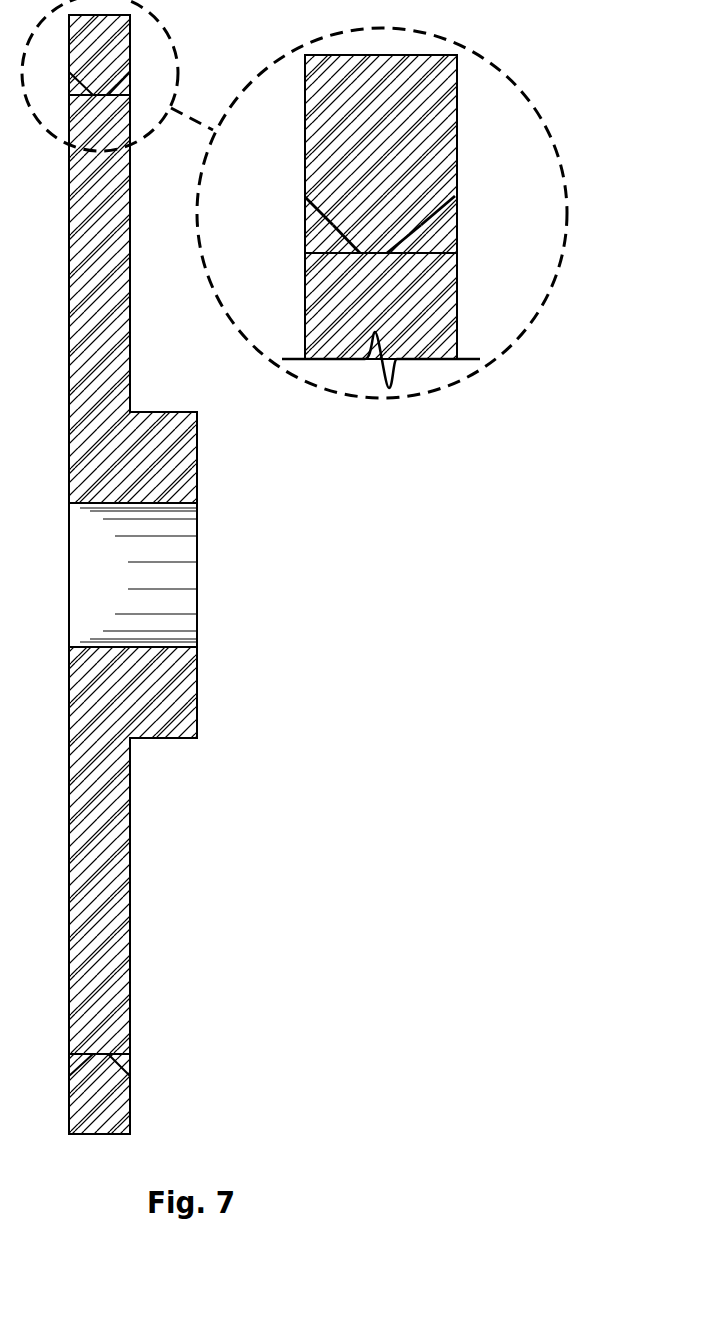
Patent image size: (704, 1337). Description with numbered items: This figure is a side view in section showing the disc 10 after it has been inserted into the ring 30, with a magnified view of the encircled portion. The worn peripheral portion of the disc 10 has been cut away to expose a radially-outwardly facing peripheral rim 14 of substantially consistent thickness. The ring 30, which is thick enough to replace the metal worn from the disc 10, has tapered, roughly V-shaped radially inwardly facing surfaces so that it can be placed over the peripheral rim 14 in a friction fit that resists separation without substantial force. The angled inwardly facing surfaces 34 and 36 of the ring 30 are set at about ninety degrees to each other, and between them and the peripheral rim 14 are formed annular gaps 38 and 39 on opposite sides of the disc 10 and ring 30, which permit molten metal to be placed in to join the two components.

The disc 10 is at (304, 308).
The peripheral rim 14 is at (329, 252).
The ring 30 is at (303, 154).
The radially inwardly facing surface 34 is at (448, 206).
The radially inwardly facing surface 36 is at (311, 207).
The annular gap 38 is at (316, 219).
The annular gap 39 is at (446, 233).